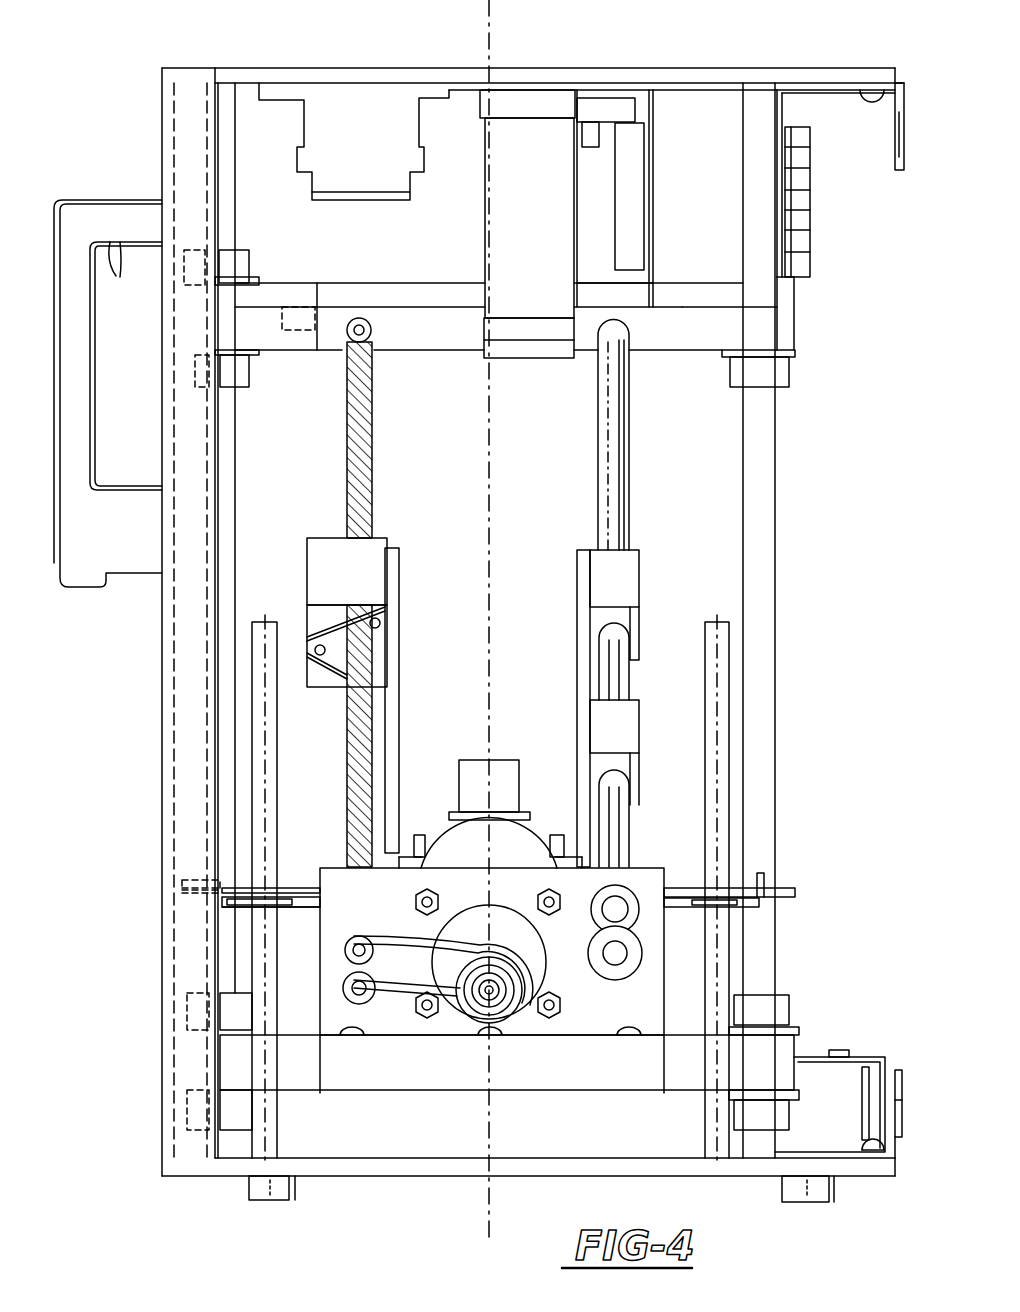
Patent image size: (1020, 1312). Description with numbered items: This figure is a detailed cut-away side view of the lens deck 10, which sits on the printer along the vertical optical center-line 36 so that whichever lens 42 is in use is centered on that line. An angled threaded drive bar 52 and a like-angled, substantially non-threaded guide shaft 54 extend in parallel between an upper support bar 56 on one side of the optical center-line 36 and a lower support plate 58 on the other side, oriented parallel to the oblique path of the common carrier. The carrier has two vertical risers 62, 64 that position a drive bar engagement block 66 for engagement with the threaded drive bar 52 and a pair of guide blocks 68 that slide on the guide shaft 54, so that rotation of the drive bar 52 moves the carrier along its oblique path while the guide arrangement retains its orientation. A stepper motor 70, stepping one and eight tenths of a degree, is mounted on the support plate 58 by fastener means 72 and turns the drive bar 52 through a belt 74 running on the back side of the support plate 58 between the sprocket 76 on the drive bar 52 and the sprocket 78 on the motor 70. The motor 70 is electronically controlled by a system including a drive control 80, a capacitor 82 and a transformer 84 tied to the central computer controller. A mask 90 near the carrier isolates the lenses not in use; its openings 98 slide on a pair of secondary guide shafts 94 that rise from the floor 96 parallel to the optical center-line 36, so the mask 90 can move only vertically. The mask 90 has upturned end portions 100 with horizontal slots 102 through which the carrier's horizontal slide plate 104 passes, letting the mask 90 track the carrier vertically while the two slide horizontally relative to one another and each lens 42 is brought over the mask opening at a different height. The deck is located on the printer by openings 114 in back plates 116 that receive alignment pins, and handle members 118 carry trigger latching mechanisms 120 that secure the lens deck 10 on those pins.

The lens deck 10 is at (148, 88).
The optical center-line 36 is at (490, 1205).
The lens 42 is at (473, 770).
The threaded drive bar 52 is at (348, 400).
The guide shaft 54 is at (606, 420).
The upper support bar 56 is at (410, 325).
The lower support plate 58 is at (342, 960).
The vertical riser 62 is at (392, 572).
The vertical riser 64 is at (577, 572).
The drive bar engagement block 66 is at (328, 552).
The guide blocks 68 is at (628, 572).
The stepper motor 70 is at (447, 842).
The fastener means 72 is at (410, 905).
The belt 74 is at (403, 998).
The sprocket 76 is at (342, 992).
The sprocket 78 is at (527, 973).
The drive control 80 is at (350, 108).
The capacitor 82 is at (538, 147).
The transformer 84 is at (688, 123).
The mask 90 is at (303, 910).
The secondary guide shafts 94 is at (250, 741).
The floor 96 is at (233, 1177).
The openings 98 is at (254, 890).
The upturned end portions 100 is at (215, 905).
The horizontal slots 102 is at (200, 886).
The horizontal slide plate 104 is at (297, 884).
The openings 114 is at (893, 128).
The back plates 116 is at (898, 170).
The handle members 118 is at (113, 215).
The trigger latching mechanisms 120 is at (118, 280).